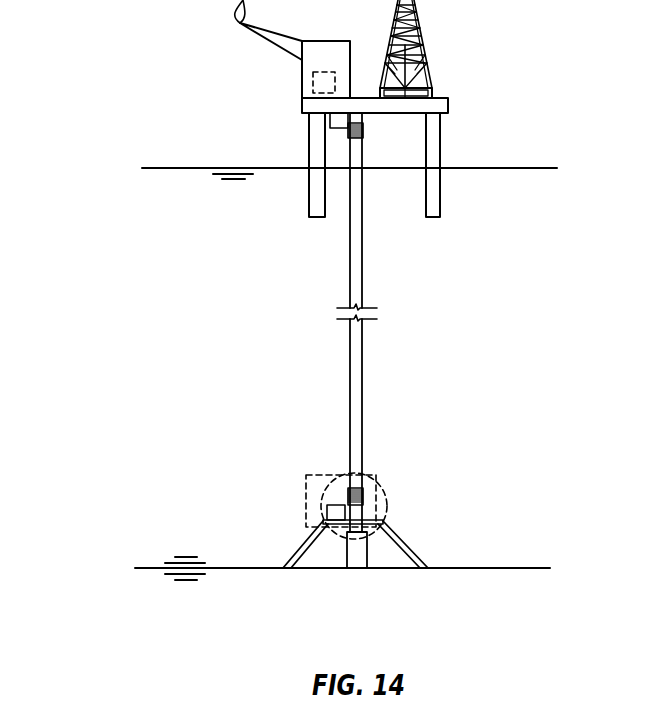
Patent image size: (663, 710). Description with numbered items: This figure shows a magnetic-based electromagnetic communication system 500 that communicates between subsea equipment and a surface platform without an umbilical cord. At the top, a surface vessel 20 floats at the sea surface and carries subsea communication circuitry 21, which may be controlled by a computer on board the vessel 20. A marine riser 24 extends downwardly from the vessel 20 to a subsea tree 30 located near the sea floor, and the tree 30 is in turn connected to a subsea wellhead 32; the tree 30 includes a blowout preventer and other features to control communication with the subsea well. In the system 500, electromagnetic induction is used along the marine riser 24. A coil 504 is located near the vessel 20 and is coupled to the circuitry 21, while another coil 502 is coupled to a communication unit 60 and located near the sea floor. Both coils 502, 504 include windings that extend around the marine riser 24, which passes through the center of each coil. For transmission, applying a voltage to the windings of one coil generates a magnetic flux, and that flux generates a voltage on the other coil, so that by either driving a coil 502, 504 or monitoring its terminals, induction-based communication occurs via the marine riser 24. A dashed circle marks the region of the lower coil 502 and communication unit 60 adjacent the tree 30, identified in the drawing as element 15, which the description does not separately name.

The electromagnetic communication system 500 is at (134, 48).
The surface vessel 20 is at (441, 140).
The subsea communication circuitry 21 is at (326, 72).
The marine riser 24 is at (363, 243).
The coil 504 is at (348, 130).
The communication unit 60 is at (320, 475).
The connector 15 is at (385, 488).
The coil 502 is at (348, 492).
The subsea tree 30 is at (407, 543).
The subsea wellhead 32 is at (358, 560).